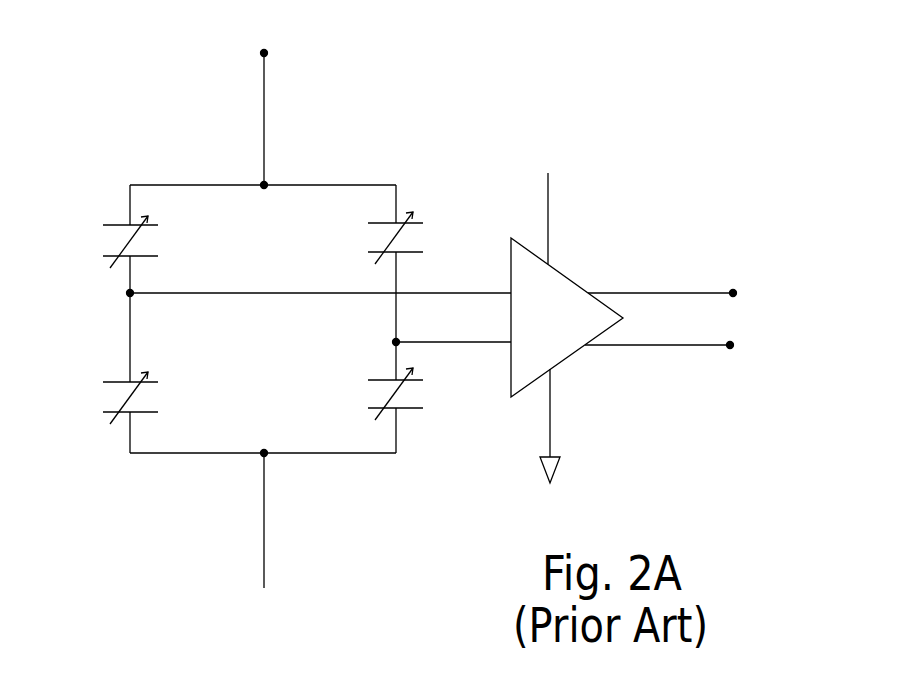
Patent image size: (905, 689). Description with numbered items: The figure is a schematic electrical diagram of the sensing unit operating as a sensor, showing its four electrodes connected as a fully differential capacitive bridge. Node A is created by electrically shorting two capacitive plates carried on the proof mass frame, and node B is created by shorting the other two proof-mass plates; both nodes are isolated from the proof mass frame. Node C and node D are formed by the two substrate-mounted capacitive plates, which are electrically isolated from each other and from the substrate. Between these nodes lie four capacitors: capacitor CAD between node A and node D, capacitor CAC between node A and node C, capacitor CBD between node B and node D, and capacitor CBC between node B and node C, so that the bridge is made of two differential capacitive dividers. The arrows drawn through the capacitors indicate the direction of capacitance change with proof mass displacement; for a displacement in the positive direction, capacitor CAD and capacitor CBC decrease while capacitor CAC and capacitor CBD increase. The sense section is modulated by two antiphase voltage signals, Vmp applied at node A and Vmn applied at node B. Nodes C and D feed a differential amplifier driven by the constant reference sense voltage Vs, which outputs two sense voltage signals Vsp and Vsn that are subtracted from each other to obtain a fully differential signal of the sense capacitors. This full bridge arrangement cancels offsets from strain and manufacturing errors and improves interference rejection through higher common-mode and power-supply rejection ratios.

The capacitor CAD is at (107, 239).
The capacitor CAC is at (420, 239).
The capacitor CBD is at (107, 373).
The capacitor CBC is at (420, 373).
The electrical node A is at (264, 203).
The electrical node B is at (264, 435).
The electrical node C is at (434, 340).
The electrical node D is at (319, 312).
The antiphase modulation voltage signal Vmp is at (260, 97).
The antiphase modulation voltage signal Vmn is at (265, 554).
The constant reference sense voltage Vs is at (550, 196).
The sense voltage signal Vsp is at (689, 297).
The sense voltage signal Vsn is at (687, 350).